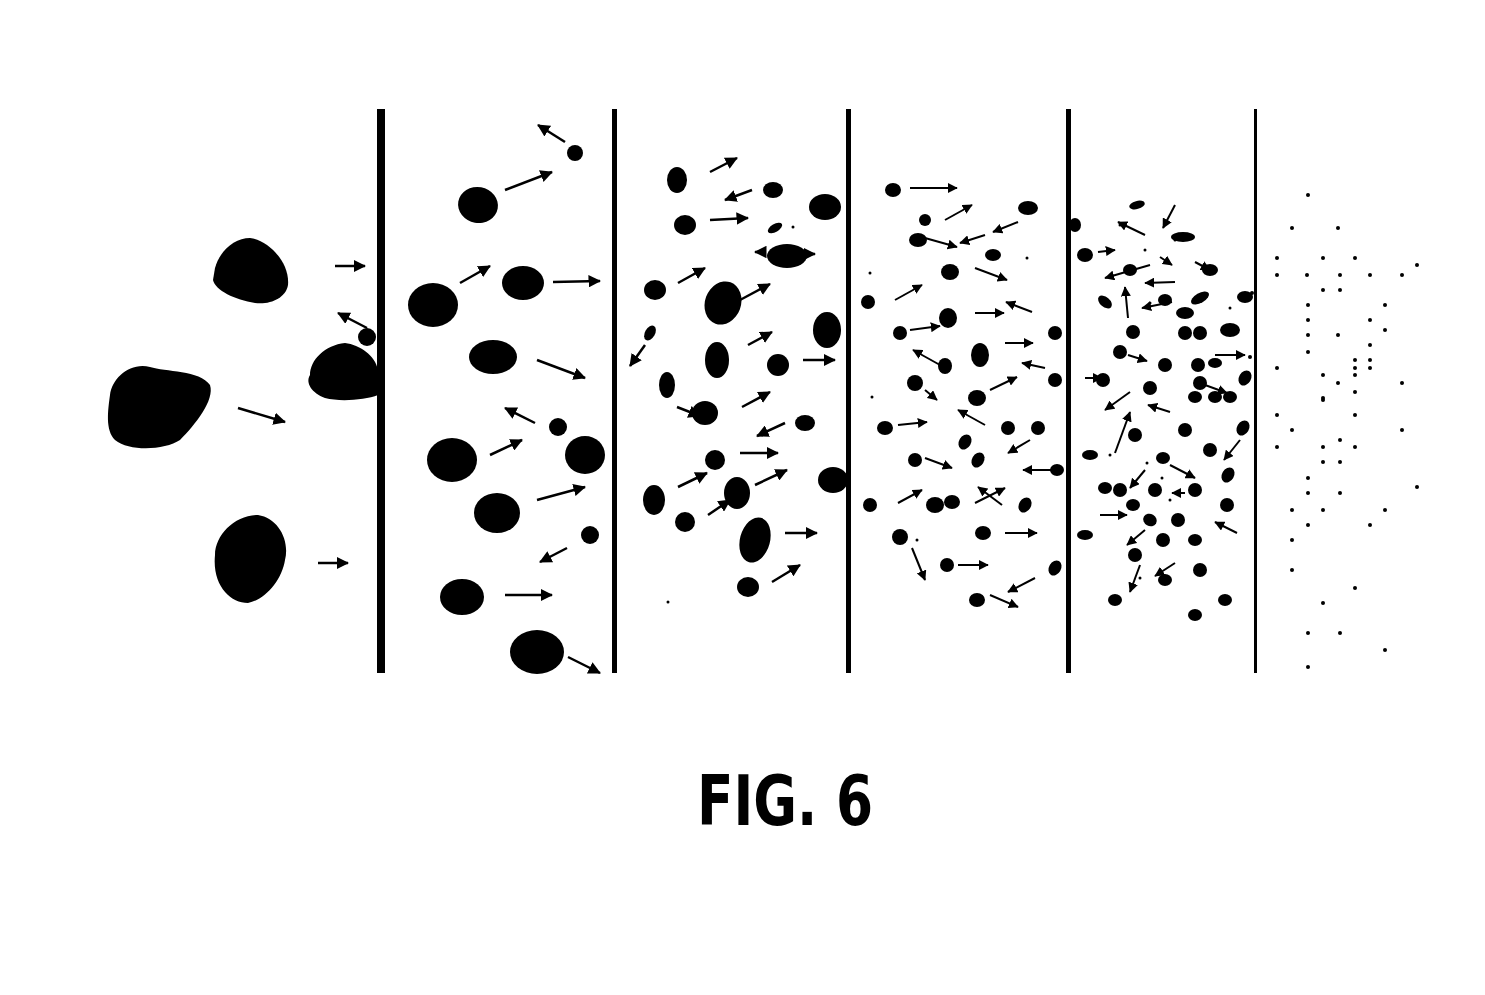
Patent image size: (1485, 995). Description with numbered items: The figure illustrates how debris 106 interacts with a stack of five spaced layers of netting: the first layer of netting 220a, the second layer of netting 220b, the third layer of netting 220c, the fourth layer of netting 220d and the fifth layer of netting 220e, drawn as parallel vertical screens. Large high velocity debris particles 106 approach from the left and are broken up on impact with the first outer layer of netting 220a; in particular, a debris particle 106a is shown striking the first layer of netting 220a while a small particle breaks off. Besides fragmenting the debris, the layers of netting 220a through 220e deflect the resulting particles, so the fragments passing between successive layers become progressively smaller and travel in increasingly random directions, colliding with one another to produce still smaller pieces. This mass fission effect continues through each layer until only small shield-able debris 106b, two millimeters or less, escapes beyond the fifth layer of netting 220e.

The debris 106 is at (123, 377).
The debris particle 106a is at (350, 400).
The small shield-able debris 106b is at (1357, 243).
The first layer of netting 220a is at (385, 136).
The second layer of netting 220b is at (618, 137).
The third layer of netting 220c is at (852, 137).
The fourth layer of netting 220d is at (1072, 137).
The fifth layer of netting 220e is at (1258, 137).